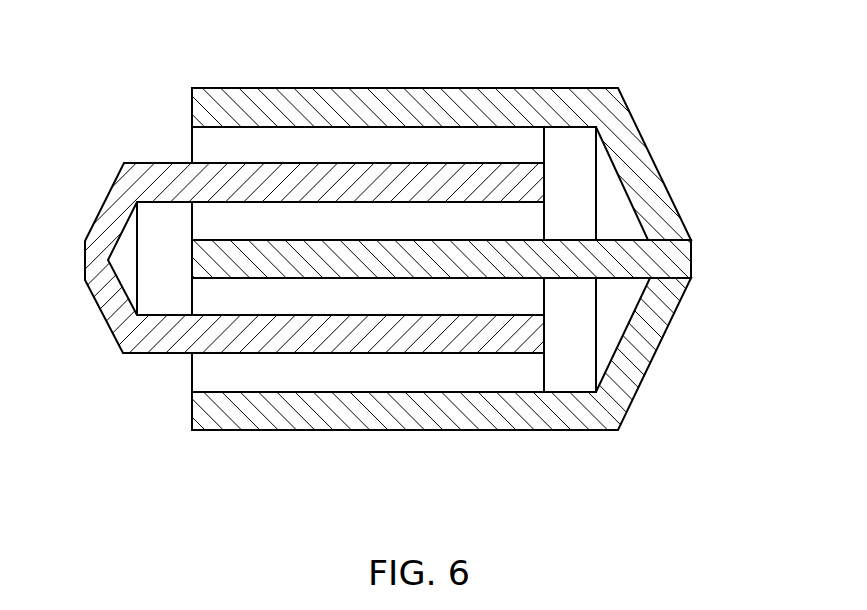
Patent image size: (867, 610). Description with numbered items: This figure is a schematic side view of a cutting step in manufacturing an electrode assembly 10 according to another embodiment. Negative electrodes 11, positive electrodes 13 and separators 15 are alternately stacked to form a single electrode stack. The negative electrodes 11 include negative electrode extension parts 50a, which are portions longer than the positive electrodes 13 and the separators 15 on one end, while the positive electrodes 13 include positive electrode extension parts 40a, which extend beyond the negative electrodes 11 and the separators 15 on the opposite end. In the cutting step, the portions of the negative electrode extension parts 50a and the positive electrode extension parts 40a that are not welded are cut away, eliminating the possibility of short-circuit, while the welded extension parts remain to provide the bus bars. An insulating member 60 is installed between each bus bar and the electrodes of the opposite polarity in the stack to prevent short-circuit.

The electrode assembly 10 is at (223, 58).
The negative electrode 11 is at (197, 108).
The positive electrode 13 is at (302, 178).
The separator 15 is at (197, 143).
The positive electrode extension part 40a is at (361, 260).
The negative electrode extension part 50a is at (648, 182).
The insulating member 60 is at (585, 152).